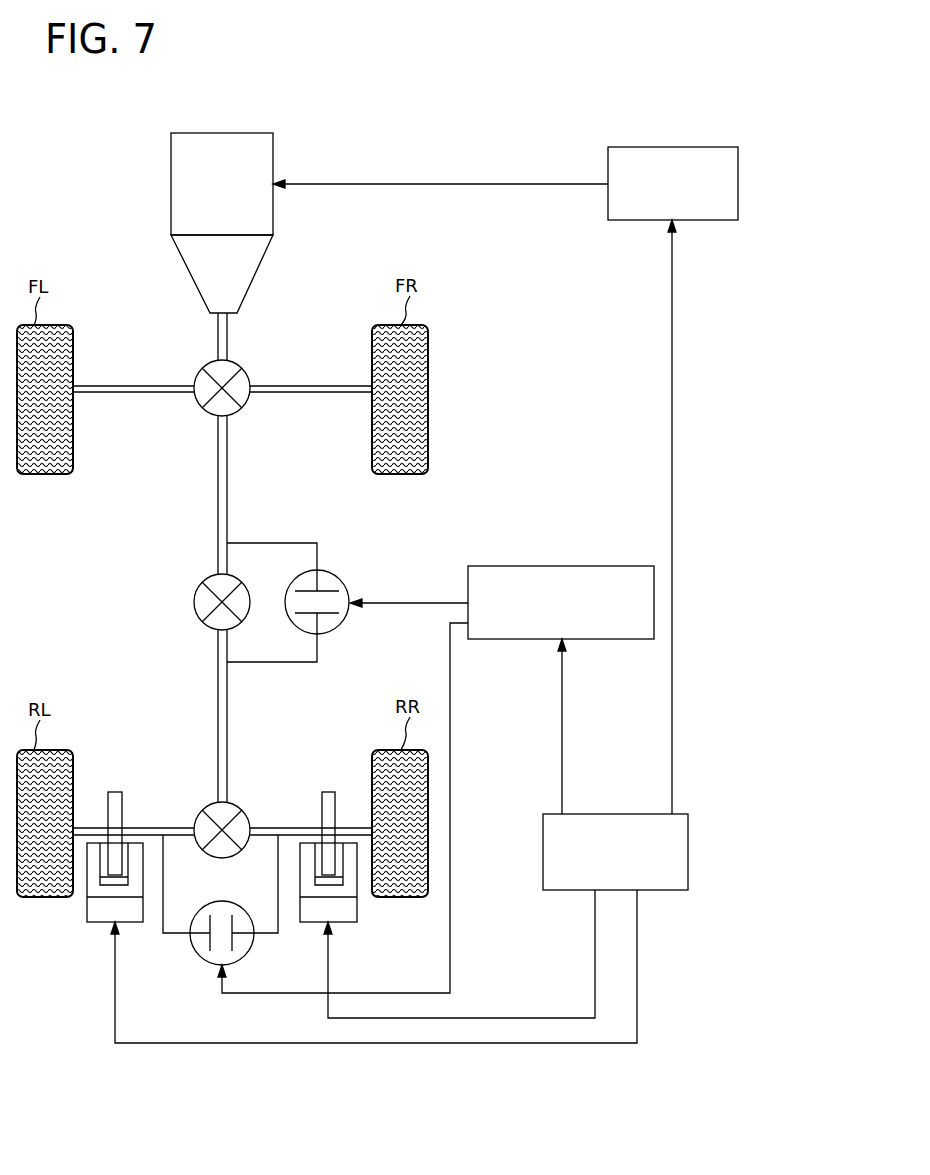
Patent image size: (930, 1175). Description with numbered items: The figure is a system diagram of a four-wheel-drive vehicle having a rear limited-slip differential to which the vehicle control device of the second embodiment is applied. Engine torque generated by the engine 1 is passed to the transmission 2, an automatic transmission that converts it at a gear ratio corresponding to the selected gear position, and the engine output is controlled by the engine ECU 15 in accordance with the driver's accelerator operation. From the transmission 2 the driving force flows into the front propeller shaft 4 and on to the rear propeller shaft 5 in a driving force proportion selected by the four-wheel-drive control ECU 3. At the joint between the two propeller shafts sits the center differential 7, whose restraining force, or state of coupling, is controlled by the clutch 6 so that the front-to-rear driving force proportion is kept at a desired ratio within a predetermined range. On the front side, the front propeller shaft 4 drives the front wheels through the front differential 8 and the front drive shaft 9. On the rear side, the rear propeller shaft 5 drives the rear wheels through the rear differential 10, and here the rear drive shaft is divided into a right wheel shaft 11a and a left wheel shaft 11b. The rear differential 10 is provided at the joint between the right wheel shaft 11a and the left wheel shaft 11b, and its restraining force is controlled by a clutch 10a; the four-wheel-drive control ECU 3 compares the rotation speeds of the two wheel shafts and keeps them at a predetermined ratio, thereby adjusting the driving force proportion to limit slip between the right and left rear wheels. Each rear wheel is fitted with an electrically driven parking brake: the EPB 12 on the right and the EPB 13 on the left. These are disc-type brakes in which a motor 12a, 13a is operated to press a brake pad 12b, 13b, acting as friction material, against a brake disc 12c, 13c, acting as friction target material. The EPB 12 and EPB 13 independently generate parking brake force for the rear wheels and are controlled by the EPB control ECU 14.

The engine 1 is at (273, 153).
The transmission 2 is at (262, 241).
The four-wheel-drive control ECU 3 is at (583, 566).
The front propeller shaft 4 is at (227, 470).
The rear propeller shaft 5 is at (227, 722).
The clutch 6 is at (340, 578).
The center differential 7 is at (205, 625).
The front differential 8 is at (245, 373).
The front drive shaft 9 is at (313, 384).
The rear differential 10 is at (232, 807).
The clutch 10a is at (202, 964).
The right wheel shaft 11a is at (286, 828).
The left wheel shaft 11b is at (151, 828).
The EPB 12 is at (298, 896).
The motor 12a is at (357, 917).
The brake pad 12b is at (342, 843).
The brake disc 12c is at (328, 792).
The EPB 13 is at (145, 896).
The motor 13a is at (87, 917).
The brake pad 13b is at (100, 838).
The brake disc 13c is at (114, 792).
The EPB control ECU 14 is at (680, 814).
The engine ECU 15 is at (720, 147).